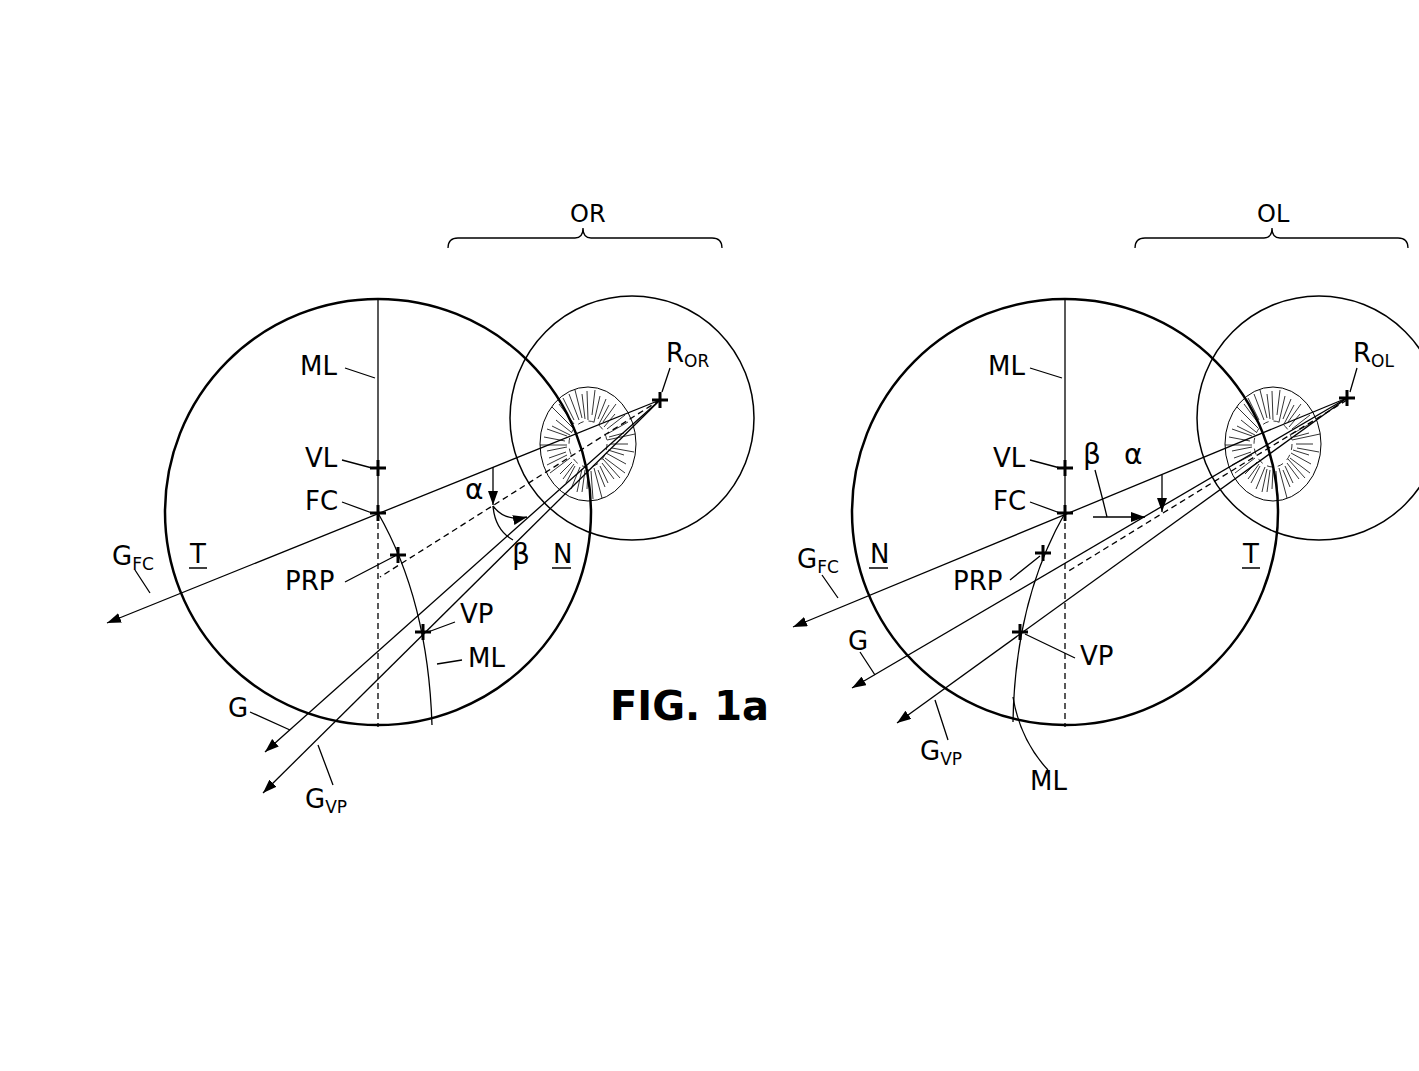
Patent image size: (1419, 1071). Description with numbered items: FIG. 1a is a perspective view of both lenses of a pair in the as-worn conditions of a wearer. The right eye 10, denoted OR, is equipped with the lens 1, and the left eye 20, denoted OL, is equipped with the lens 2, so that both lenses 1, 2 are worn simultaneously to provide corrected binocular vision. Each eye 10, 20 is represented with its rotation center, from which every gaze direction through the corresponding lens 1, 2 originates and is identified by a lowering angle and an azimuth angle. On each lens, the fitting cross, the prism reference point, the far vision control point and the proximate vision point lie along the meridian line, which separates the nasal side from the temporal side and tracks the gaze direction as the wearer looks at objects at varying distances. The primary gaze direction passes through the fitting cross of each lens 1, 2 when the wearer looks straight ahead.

The lens 1 is at (443, 312).
The right eye 10 is at (689, 311).
The lens 2 is at (1130, 312).
The left eye 20 is at (1375, 311).